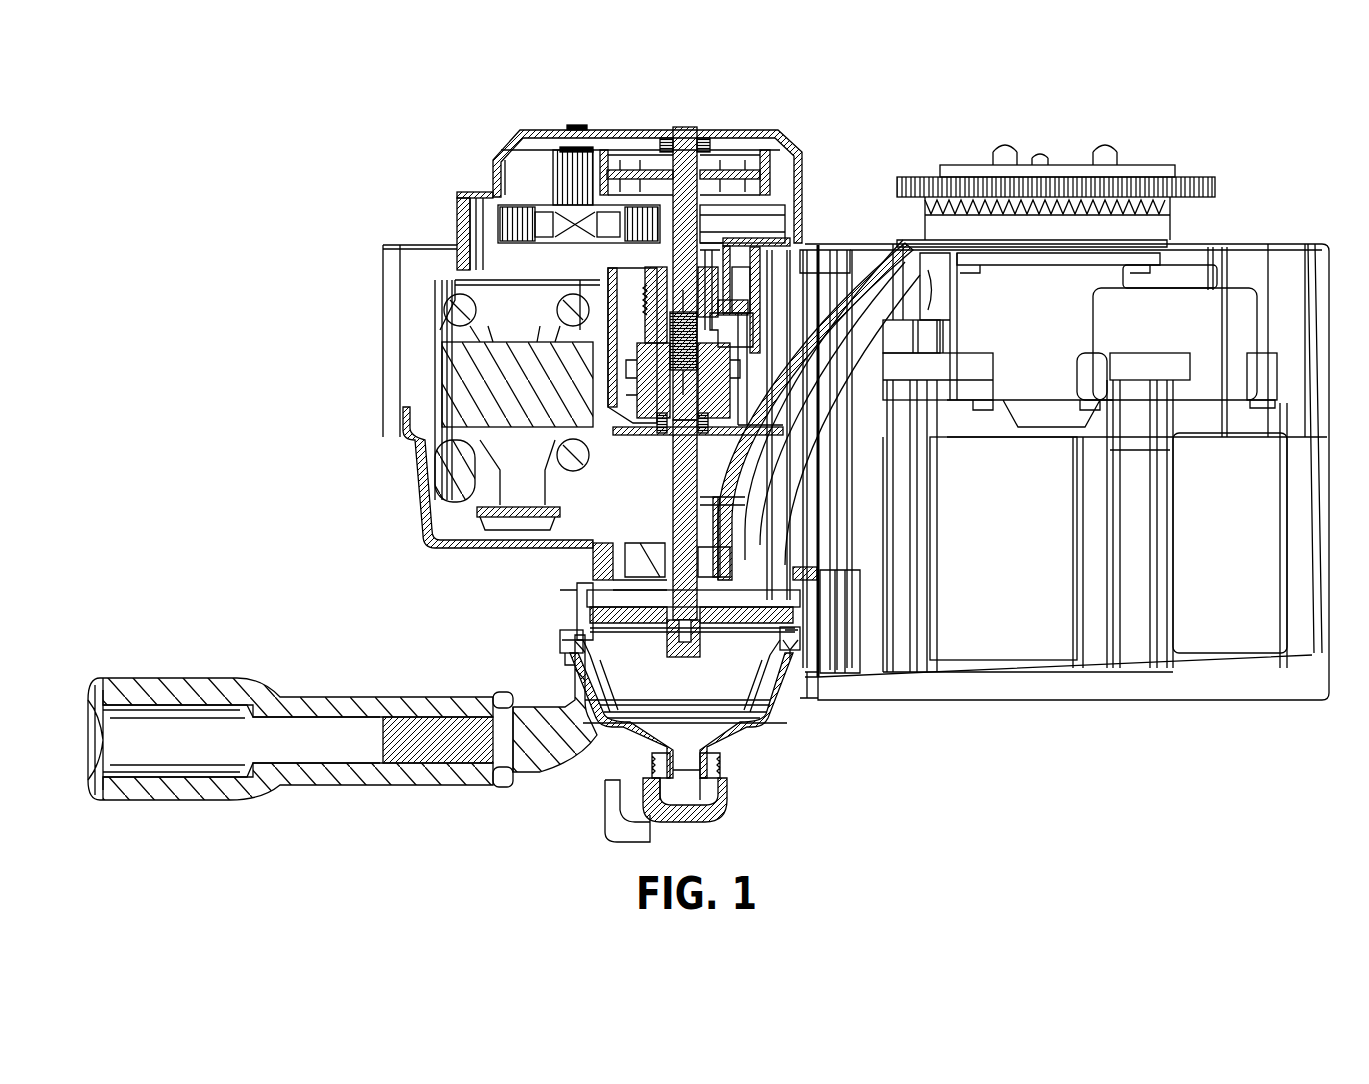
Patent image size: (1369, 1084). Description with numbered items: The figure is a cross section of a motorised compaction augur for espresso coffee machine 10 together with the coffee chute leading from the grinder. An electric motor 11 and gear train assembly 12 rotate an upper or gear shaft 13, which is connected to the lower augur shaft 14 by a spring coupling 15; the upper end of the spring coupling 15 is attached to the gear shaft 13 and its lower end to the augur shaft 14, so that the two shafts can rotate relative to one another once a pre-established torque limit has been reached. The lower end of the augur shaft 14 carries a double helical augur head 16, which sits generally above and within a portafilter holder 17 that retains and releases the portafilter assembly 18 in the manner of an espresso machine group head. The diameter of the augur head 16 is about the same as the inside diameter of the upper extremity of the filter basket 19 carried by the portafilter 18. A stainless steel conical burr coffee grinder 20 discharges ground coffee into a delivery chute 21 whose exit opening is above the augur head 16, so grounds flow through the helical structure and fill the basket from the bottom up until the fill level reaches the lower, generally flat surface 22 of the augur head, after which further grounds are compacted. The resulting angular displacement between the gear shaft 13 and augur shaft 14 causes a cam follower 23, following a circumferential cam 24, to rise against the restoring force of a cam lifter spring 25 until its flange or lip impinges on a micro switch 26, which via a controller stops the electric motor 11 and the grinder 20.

The motorised compaction augur for espresso coffee machine 10 is at (821, 147).
The electric motor 11 is at (488, 406).
The gear train assembly 12 is at (478, 152).
The upper or gear shaft 13 is at (683, 142).
The lower augur shaft 14 is at (673, 490).
The spring coupling 15 is at (672, 378).
The double helical augur head 16 is at (713, 635).
The portafilter holder 17 is at (575, 610).
The portafilter assembly 18 is at (353, 697).
The filter basket 19 is at (760, 547).
The coffee grinder 20 is at (1180, 140).
The delivery chute 21 is at (788, 633).
The lower generally flat surface of the augur head 22 is at (620, 657).
The cam follower 23 is at (633, 338).
The circumferential cam 24 is at (640, 377).
The cam lifter spring 25 is at (647, 300).
The micro switch 26 is at (758, 307).